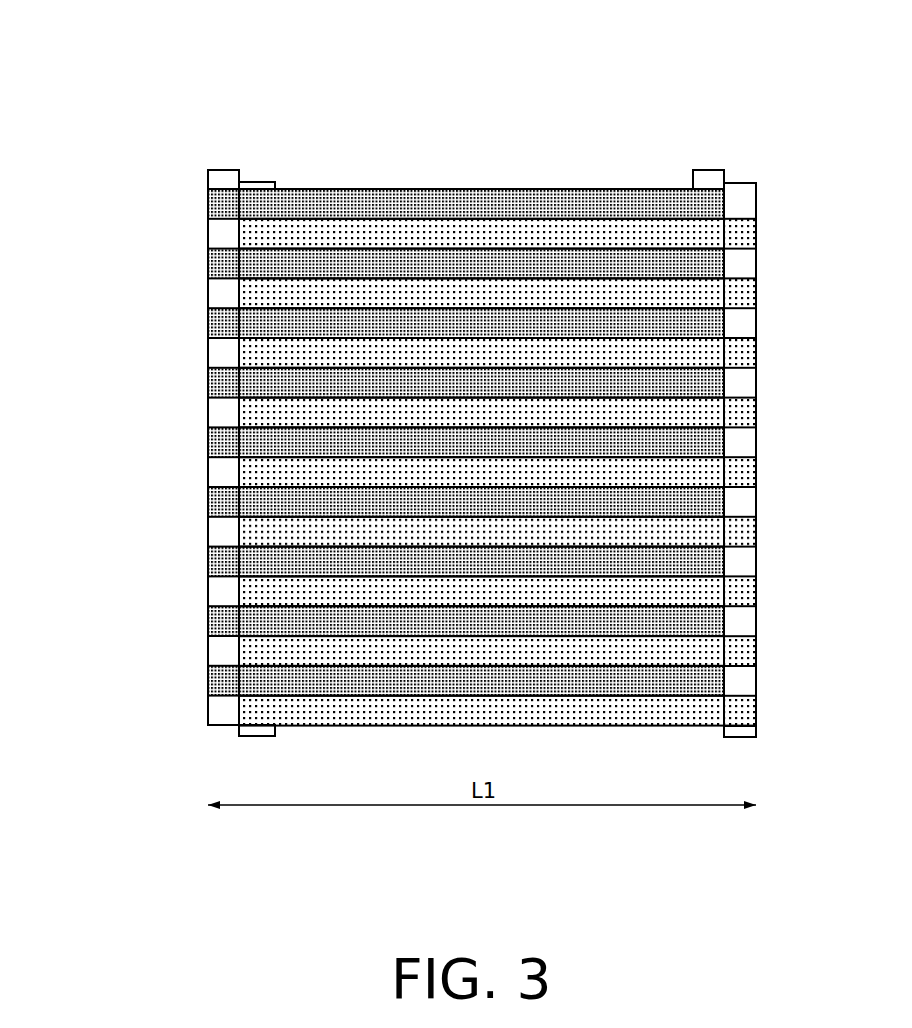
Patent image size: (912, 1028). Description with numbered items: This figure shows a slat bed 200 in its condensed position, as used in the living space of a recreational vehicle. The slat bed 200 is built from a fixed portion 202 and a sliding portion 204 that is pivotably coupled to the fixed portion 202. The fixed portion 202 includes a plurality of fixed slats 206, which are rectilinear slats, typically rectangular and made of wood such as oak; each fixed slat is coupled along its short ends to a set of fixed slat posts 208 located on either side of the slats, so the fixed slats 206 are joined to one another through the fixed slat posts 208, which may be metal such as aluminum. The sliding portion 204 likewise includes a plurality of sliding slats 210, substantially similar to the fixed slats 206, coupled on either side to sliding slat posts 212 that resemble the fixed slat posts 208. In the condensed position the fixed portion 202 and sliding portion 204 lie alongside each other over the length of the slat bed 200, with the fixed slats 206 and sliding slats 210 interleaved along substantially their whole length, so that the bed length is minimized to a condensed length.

The slat bed 200 is at (462, 415).
The fixed portion 202 is at (395, 447).
The sliding portion 204 is at (565, 454).
The plurality of fixed slats 206 is at (200, 378).
The fixed slat posts 208 is at (233, 164).
The plurality of sliding slats 210 is at (748, 413).
The sliding slat posts 212 is at (267, 728).